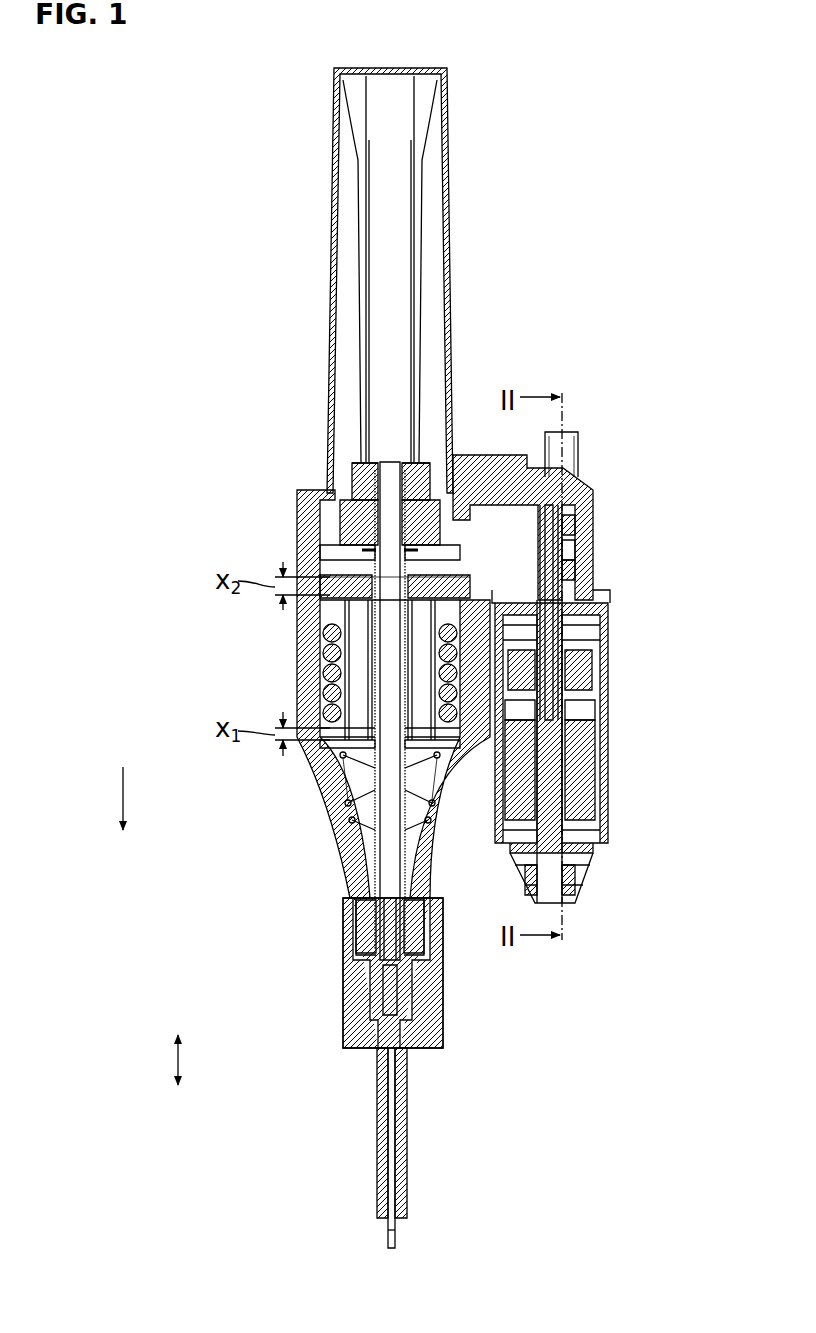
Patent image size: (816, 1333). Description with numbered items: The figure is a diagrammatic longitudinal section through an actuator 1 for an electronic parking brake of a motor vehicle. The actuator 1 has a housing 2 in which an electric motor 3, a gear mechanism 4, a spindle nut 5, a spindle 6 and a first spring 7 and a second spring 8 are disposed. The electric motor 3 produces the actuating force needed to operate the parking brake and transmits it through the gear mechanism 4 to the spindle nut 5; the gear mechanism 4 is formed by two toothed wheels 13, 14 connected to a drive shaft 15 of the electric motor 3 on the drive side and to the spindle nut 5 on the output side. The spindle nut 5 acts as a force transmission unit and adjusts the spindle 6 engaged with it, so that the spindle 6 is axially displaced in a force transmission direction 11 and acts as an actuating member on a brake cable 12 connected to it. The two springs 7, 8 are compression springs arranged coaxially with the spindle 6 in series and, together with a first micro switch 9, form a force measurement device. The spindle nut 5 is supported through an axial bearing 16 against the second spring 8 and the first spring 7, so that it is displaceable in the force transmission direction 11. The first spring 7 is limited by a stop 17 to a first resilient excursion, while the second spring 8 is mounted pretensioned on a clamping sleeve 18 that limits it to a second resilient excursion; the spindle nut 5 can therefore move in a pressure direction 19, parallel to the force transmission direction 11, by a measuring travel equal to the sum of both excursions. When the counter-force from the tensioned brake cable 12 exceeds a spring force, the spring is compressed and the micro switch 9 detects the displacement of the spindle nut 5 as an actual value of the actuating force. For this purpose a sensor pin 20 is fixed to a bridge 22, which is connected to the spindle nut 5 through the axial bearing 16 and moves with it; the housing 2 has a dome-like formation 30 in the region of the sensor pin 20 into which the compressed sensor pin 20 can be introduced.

The actuator 1 is at (150, 126).
The housing 2 is at (333, 122).
The electric motor 3 is at (655, 712).
The gear mechanism 4 is at (572, 486).
The spindle nut 5 is at (365, 478).
The spindle 6 is at (390, 878).
The first spring 7 is at (352, 836).
The second spring 8 is at (335, 688).
The first micro switch 9 is at (580, 565).
The force transmission direction 11 is at (177, 1060).
The brake cable 12 is at (396, 1237).
The toothed wheel 13 is at (562, 528).
The toothed wheel 14 is at (322, 522).
The drive shaft 15 is at (556, 606).
The axial bearing 16 is at (330, 552).
The stop 17 is at (318, 762).
The clamping sleeve 18 is at (325, 656).
The pressure direction 19 is at (122, 798).
The sensor pin 20 is at (600, 545).
The bridge 22 is at (322, 576).
The dome-like formation 30 is at (572, 432).